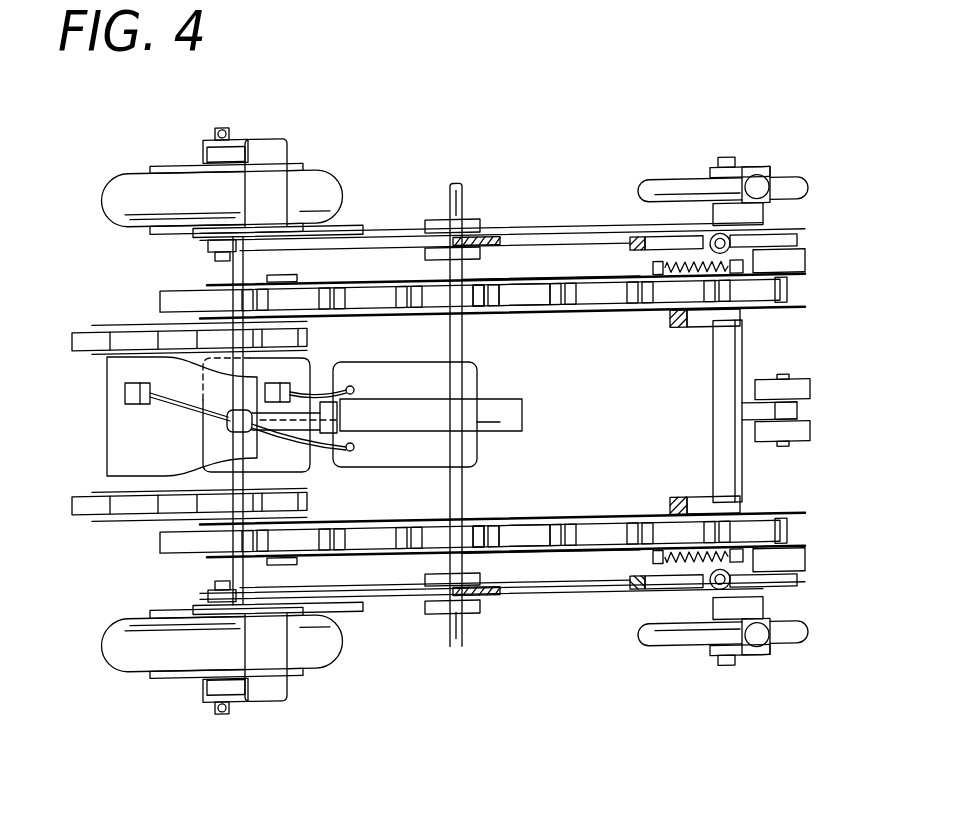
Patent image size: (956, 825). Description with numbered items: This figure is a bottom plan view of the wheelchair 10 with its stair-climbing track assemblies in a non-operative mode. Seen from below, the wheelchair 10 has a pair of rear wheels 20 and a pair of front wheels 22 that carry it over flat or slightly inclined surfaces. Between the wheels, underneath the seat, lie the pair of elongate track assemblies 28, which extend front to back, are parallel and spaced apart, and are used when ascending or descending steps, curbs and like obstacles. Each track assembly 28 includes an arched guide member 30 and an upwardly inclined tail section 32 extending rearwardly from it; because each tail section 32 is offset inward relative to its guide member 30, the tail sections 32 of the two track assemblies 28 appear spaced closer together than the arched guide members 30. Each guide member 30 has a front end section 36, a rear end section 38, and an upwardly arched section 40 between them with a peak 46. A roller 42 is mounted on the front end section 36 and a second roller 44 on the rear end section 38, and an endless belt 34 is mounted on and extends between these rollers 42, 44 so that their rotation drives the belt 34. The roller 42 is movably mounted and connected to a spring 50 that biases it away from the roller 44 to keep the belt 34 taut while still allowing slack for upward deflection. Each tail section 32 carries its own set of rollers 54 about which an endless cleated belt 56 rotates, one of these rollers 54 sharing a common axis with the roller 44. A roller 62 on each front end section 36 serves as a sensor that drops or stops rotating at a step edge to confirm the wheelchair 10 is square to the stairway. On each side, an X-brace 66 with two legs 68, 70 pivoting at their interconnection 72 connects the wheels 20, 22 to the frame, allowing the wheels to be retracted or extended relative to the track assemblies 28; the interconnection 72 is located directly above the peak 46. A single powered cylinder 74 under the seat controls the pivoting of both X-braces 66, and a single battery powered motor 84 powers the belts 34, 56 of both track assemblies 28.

The wheelchair 10 is at (598, 78).
The rear wheels 20 is at (135, 190).
The front wheels 22 is at (790, 185).
The track assemblies 28 is at (805, 305).
The arched guide member 30 is at (597, 312).
The inclined tail section 32 is at (92, 328).
The endless belt 34 is at (530, 297).
The front end section 36 is at (762, 309).
The rear end section 38 is at (207, 283).
The upwardly arched section 40 is at (513, 280).
The roller 42 is at (662, 300).
The second roller 44 is at (270, 283).
The peak 46 is at (478, 313).
The spring 50 is at (710, 262).
The rollers 54 is at (287, 357).
The endless cleated belt 56 is at (132, 335).
The roller 62 is at (805, 262).
The X-braces 66 is at (585, 235).
The leg 68 is at (403, 263).
The leg 70 is at (602, 232).
The interconnection 72 is at (468, 230).
The powered cylinder 74 is at (515, 417).
The battery powered motor 84 is at (473, 390).